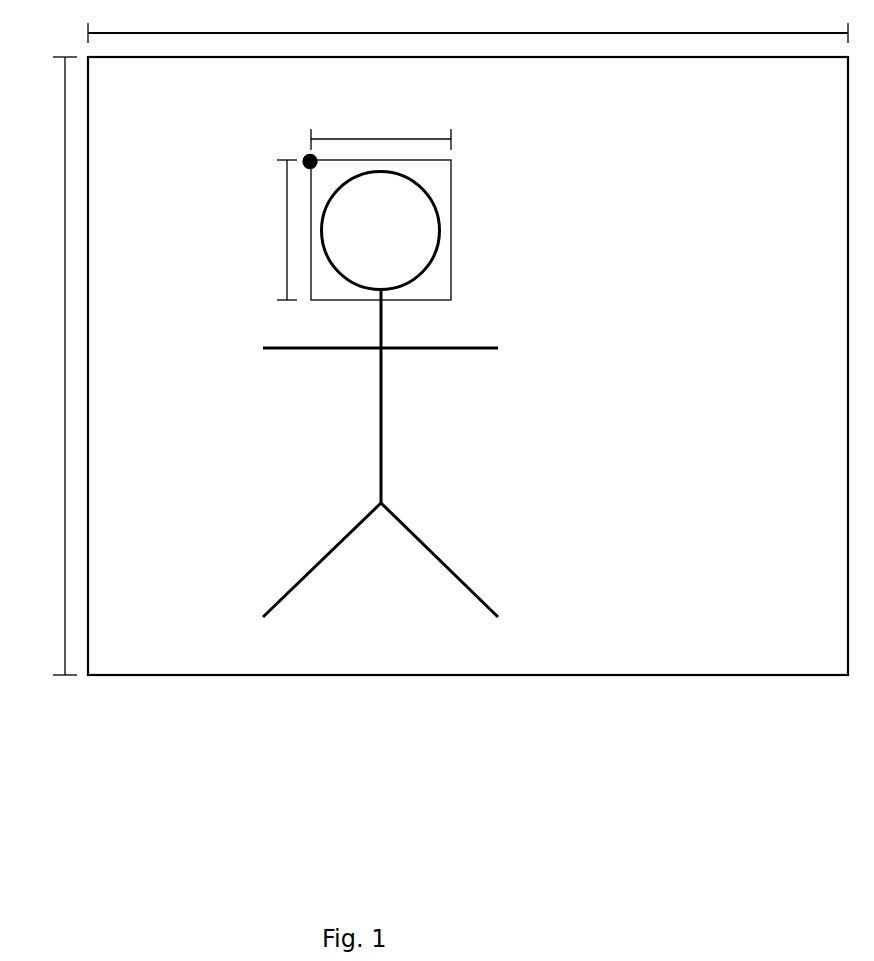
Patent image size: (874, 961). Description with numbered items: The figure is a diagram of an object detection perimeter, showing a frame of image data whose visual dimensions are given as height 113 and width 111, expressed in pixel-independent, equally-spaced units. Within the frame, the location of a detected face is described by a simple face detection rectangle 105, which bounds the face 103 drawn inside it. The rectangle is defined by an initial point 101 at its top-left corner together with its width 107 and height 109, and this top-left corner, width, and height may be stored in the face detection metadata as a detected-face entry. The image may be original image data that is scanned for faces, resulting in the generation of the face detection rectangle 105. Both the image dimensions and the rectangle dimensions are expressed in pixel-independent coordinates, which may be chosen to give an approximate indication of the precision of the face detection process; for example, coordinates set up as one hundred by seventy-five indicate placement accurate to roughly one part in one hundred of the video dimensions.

The initial point 101 is at (303, 157).
The face 103 is at (433, 200).
The face detection rectangle 105 is at (451, 280).
The width 107 is at (381, 131).
The height 109 is at (271, 230).
The width 111 is at (468, 24).
The height 113 is at (42, 366).